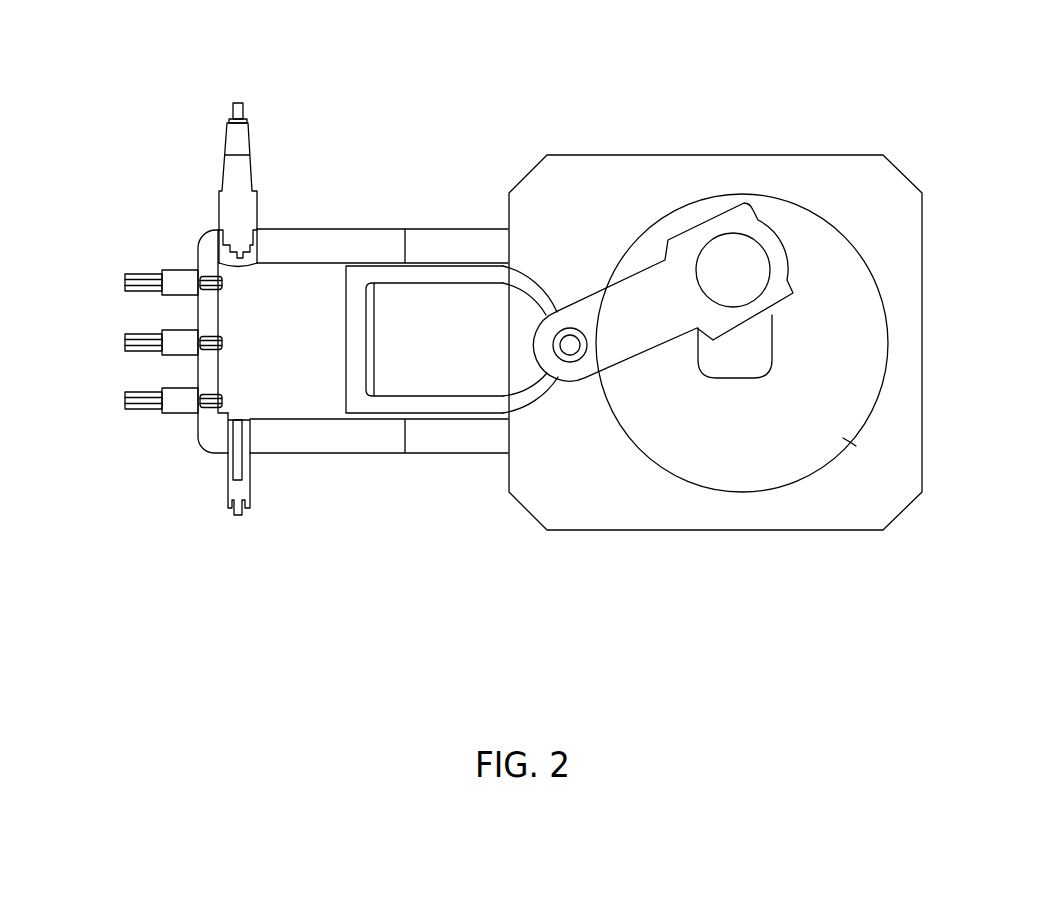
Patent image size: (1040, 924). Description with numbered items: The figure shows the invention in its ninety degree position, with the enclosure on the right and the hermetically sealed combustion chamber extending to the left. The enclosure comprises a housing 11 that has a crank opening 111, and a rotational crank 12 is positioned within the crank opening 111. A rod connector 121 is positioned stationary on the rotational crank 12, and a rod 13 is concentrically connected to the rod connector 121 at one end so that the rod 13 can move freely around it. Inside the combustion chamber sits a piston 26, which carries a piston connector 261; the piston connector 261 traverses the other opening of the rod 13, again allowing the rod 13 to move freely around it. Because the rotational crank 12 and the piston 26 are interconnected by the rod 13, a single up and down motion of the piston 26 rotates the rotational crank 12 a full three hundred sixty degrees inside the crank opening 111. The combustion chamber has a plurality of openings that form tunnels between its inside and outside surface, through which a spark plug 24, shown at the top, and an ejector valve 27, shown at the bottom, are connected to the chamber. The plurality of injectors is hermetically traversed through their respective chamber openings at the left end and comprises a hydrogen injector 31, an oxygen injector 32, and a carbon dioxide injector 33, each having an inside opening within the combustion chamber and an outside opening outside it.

The housing 11 is at (880, 183).
The crank opening 111 is at (850, 442).
The rotational crank 12 is at (873, 357).
The rod connector 121 is at (732, 253).
The rod 13 is at (643, 343).
The piston connector 261 is at (570, 348).
The piston 26 is at (437, 278).
The spark plug 24 is at (237, 137).
The ejector valve 27 is at (230, 493).
The hydrogen injector 31 is at (172, 278).
The oxygen injector 32 is at (172, 340).
The carbon dioxide injector 33 is at (172, 407).